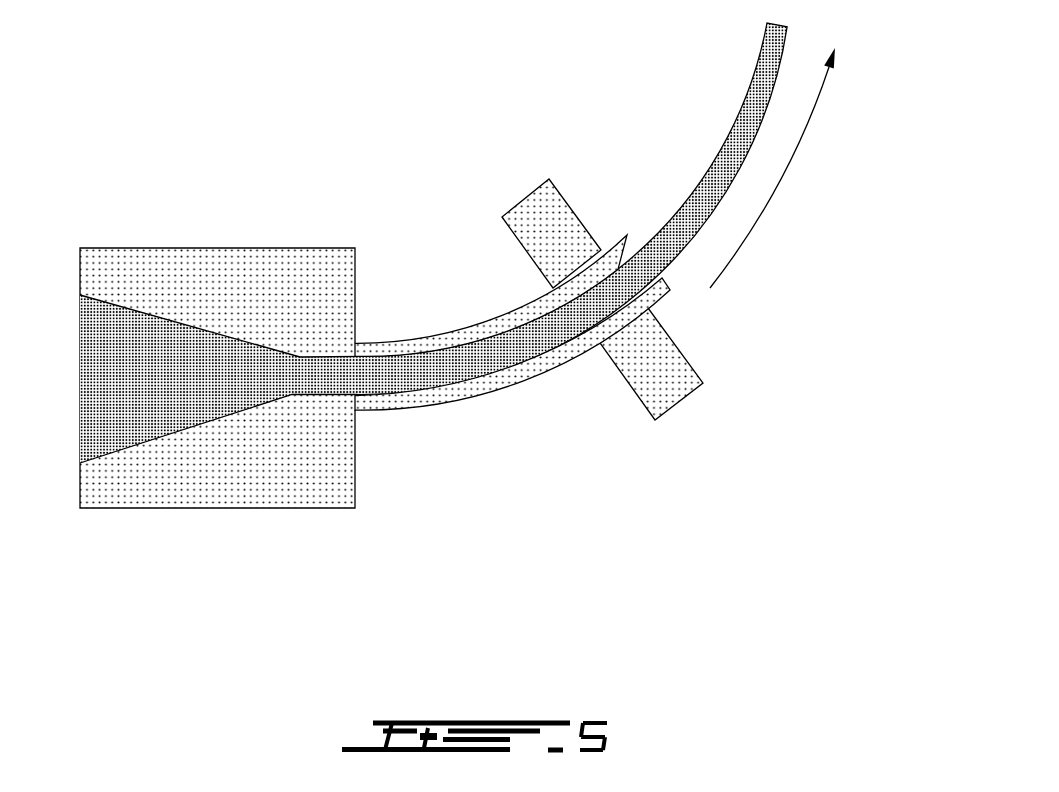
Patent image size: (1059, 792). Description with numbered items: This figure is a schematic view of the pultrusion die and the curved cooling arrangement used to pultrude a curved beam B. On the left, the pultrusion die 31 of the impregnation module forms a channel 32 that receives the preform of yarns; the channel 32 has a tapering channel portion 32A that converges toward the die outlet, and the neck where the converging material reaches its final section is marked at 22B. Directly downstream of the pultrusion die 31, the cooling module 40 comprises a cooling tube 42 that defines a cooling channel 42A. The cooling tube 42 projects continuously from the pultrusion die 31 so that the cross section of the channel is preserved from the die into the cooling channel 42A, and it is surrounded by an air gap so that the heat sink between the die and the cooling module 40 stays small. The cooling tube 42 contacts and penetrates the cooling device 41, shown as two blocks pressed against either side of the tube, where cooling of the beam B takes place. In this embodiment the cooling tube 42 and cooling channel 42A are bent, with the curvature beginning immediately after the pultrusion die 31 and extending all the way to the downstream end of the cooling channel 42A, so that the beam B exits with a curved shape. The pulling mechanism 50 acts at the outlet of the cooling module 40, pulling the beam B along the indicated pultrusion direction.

The pultrusion die 31 is at (355, 237).
The channel 32 is at (397, 243).
The tapering channel portion 32A is at (152, 441).
The consolidation point of neck 22B is at (312, 356).
The cooling device 41 is at (515, 183).
The cooling tube 42 is at (512, 399).
The cooling channel 42A is at (617, 272).
The cooling module 40 is at (539, 380).
The pulling mechanism 50 is at (738, 257).
The beam B is at (752, 80).